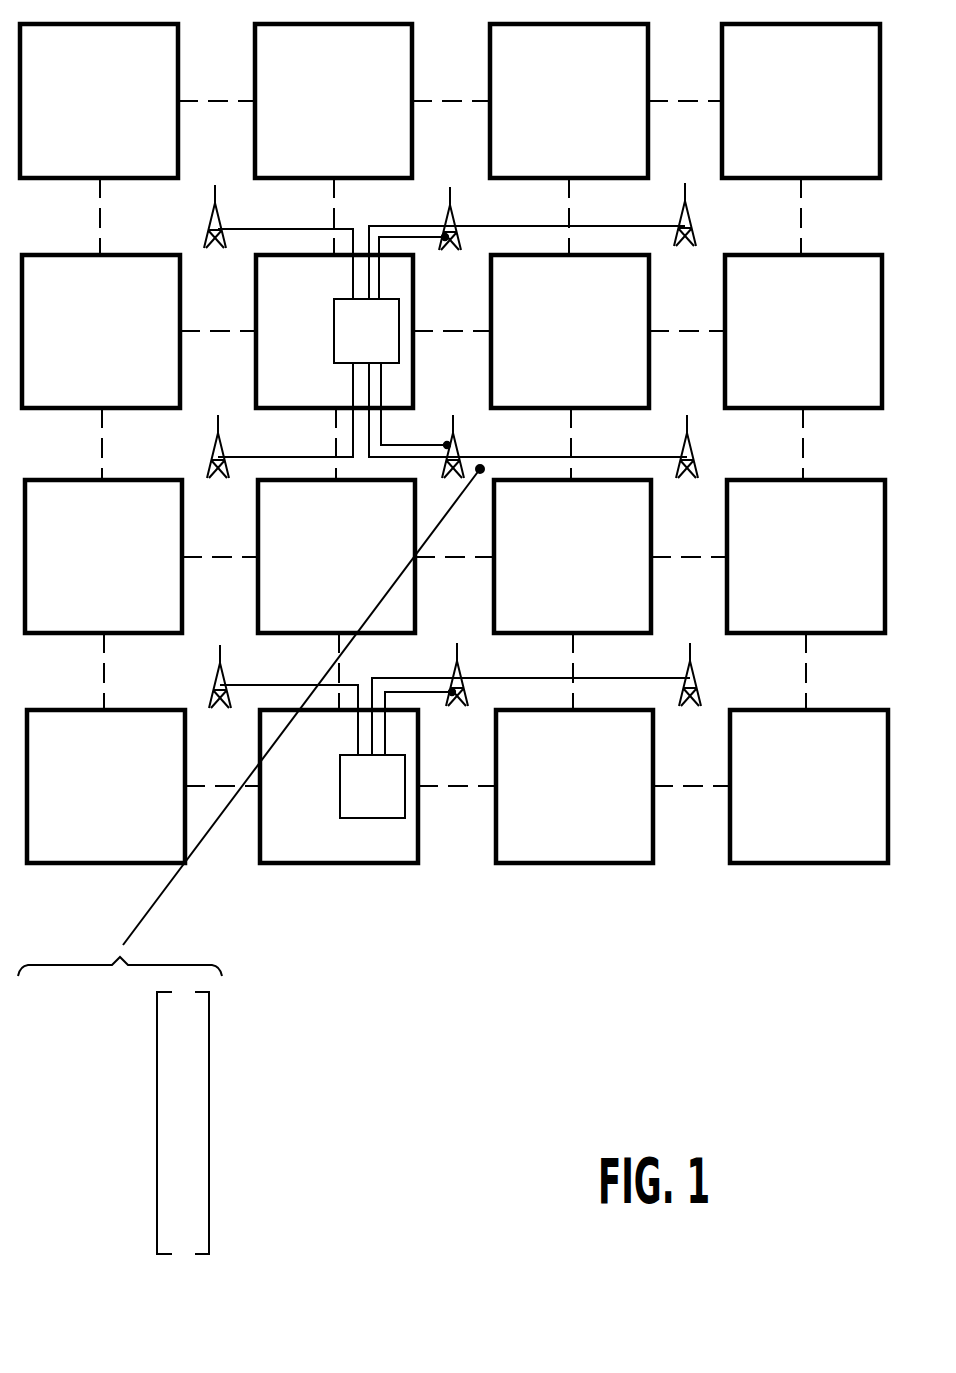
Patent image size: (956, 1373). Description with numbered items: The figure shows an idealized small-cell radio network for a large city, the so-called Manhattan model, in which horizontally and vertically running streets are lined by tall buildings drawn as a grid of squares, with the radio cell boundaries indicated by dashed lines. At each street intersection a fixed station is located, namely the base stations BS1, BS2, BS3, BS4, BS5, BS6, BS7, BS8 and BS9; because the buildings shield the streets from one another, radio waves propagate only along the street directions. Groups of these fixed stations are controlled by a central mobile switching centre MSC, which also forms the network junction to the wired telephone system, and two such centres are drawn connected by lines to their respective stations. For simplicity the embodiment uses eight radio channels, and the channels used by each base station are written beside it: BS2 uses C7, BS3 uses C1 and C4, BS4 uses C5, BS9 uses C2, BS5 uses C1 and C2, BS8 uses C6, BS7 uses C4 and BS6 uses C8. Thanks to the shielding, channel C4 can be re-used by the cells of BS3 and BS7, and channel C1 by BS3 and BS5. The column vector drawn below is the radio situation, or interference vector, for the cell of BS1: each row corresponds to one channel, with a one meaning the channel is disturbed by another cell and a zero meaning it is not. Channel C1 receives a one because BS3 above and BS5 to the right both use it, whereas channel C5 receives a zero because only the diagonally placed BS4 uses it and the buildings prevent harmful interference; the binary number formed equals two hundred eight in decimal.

The fixed station BS1 is at (457, 445).
The fixed station BS2 is at (219, 214).
The fixed station BS3 is at (454, 216).
The fixed station BS4 is at (689, 215).
The fixed station BS5 is at (691, 445).
The fixed station BS6 is at (694, 675).
The fixed station BS7 is at (461, 675).
The fixed station BS8 is at (224, 675).
The fixed station BS9 is at (222, 445).
The radio channel C1 is at (385, 703).
The radio channel C2 is at (473, 441).
The radio channel C4 is at (471, 440).
The radio channel C5 is at (703, 211).
The radio channel C6 is at (240, 671).
The radio channel C7 is at (236, 211).
The radio channel C8 is at (708, 670).
The mobile switching centre MSC is at (454, 522).